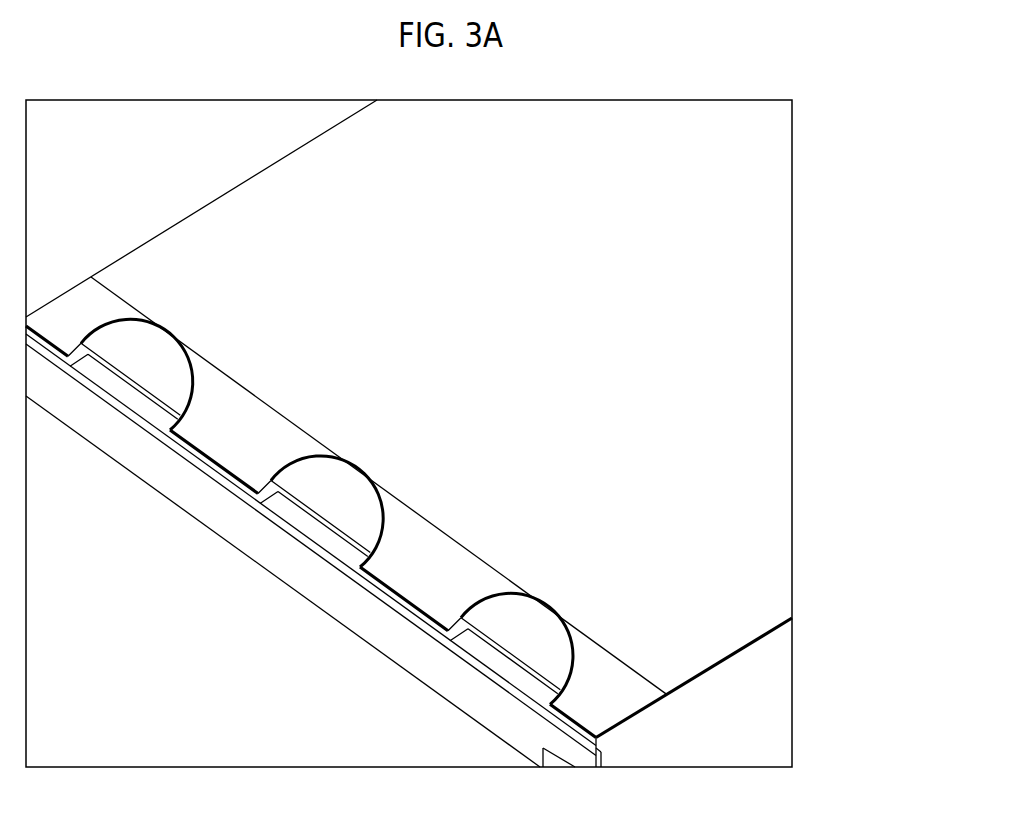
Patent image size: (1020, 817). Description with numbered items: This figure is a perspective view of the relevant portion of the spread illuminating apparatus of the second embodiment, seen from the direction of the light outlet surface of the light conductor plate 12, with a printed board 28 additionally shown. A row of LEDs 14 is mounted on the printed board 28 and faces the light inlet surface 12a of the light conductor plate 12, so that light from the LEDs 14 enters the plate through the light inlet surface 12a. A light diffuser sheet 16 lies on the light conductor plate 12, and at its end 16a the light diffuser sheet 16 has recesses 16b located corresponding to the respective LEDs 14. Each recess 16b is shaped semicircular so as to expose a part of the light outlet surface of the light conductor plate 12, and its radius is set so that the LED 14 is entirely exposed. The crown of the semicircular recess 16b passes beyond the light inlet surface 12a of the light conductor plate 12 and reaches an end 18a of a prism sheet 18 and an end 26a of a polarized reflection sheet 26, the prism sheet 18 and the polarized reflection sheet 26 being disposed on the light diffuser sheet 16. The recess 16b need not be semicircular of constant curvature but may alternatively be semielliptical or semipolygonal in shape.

The light conductor plate 12 is at (338, 498).
The light inlet surface 12a is at (332, 531).
The LED 14 is at (668, 695).
The light diffuser sheet 16 is at (592, 657).
The end of light diffuser sheet 16a is at (578, 732).
The recess 16b is at (515, 595).
The prism sheet 18 is at (469, 208).
The end of prism sheet 18a is at (379, 491).
The polarized reflection sheet 26 is at (773, 211).
The end of polarized reflection sheet 26a is at (455, 542).
The printed board 28 is at (118, 448).